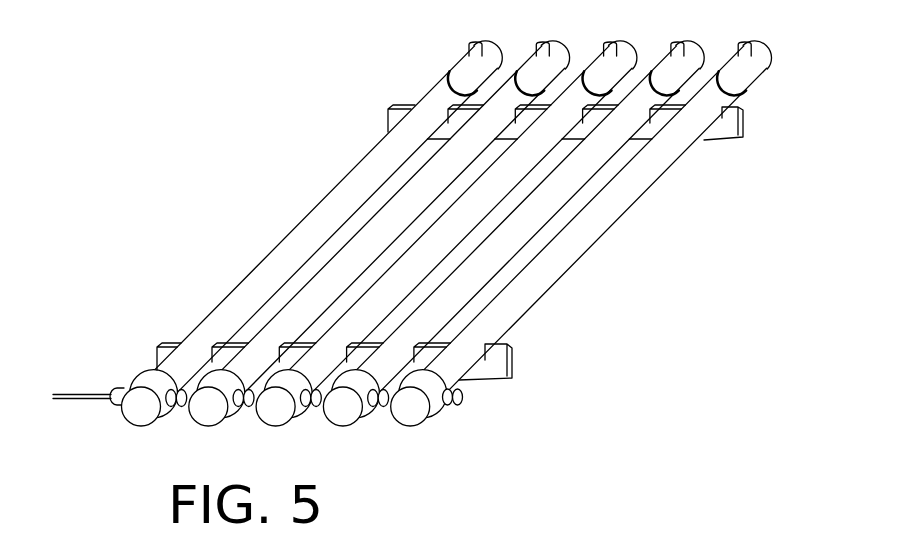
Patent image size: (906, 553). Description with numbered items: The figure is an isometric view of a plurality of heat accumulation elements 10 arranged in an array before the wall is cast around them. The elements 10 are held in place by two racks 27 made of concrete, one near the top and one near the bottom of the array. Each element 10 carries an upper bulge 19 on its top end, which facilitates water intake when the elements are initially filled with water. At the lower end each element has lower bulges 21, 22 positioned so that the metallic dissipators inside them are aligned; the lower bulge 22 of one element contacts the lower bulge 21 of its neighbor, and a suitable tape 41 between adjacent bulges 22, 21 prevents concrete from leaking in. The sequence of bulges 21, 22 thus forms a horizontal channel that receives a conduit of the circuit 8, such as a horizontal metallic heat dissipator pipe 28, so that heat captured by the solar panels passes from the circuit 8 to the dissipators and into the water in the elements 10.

The circuit 8 is at (76, 413).
The heat accumulation element 10 is at (436, 260).
The upper bulge 19 is at (478, 42).
The lower bulge 21 is at (113, 408).
The lower bulge 22 is at (183, 401).
The rack 27 is at (388, 108).
The horizontal metallic heat dissipator pipe 28 is at (78, 393).
The tape 41 is at (384, 404).